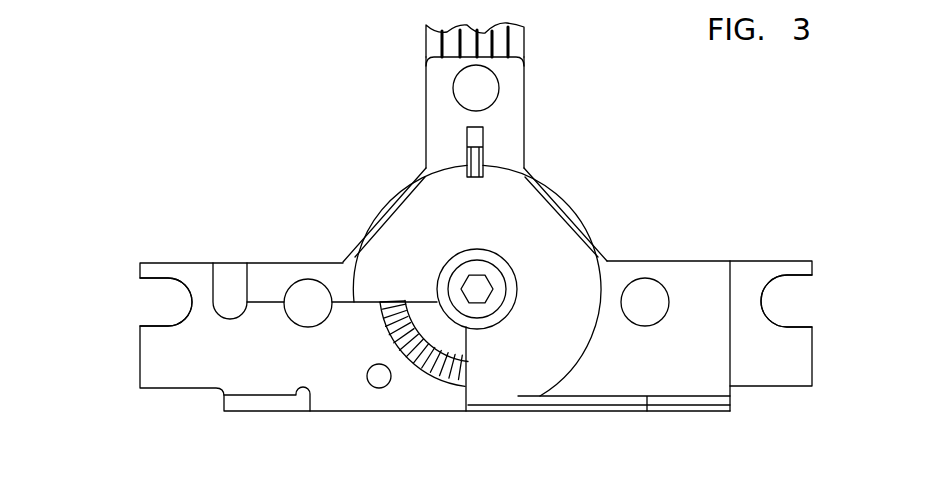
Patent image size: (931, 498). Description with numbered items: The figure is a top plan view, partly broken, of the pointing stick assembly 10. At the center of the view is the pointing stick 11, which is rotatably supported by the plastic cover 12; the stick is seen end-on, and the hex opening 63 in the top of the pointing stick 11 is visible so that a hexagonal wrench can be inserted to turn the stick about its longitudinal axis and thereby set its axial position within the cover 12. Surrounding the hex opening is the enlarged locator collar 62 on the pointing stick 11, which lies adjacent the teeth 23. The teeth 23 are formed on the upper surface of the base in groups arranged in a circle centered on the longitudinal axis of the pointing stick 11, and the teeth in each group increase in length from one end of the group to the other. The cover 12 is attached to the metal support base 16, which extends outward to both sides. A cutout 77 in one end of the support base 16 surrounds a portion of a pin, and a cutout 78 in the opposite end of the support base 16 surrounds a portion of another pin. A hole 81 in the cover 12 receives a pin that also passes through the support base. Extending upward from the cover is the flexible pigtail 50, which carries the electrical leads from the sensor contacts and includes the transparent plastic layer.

The pointing stick assembly 10 is at (710, 148).
The pointing stick 11 is at (517, 266).
The cover 12 is at (732, 283).
The support base 16 is at (178, 260).
The teeth 23 is at (430, 375).
The flexible pigtail 50 is at (527, 41).
The locator collar 62 is at (497, 262).
The hex opening 63 is at (482, 300).
The cutout 77 is at (792, 277).
The cutout 78 is at (157, 282).
The hole 81 is at (487, 78).